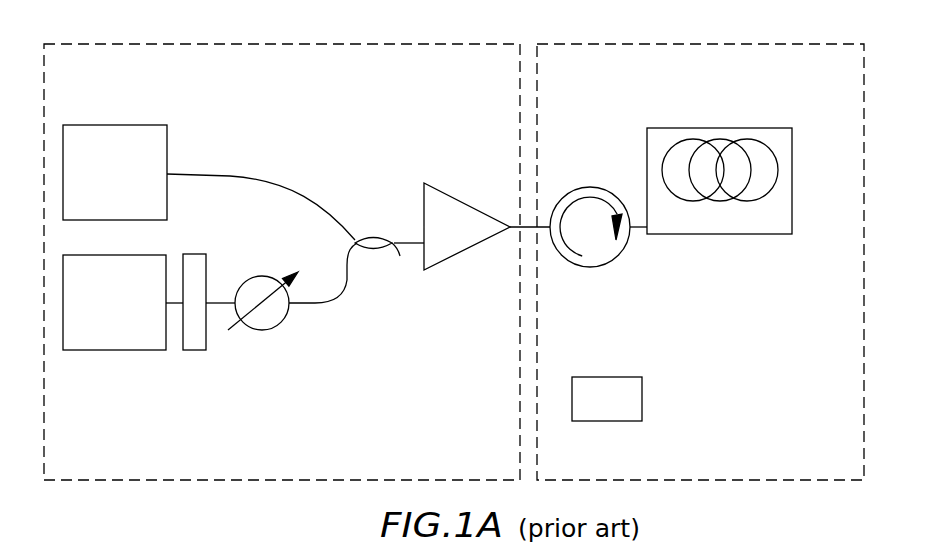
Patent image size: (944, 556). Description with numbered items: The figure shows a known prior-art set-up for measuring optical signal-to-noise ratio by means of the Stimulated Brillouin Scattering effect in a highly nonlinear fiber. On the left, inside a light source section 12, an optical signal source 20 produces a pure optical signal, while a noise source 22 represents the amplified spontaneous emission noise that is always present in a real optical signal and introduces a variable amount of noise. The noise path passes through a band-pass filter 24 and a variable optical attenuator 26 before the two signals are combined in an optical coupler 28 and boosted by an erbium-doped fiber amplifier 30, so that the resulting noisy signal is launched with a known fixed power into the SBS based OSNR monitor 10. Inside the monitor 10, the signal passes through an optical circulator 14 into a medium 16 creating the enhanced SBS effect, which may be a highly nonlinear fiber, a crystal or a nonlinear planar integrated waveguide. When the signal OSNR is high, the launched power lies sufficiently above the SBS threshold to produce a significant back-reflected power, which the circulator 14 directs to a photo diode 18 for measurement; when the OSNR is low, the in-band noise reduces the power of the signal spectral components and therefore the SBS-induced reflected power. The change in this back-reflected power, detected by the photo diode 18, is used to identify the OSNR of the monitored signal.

The SBS based OSNR monitor 10 is at (594, 80).
The light source section 12 is at (97, 81).
The optical circulator 14 is at (592, 187).
The medium 16 is at (712, 119).
The photo diode 18 is at (635, 398).
The optical signal source 20 is at (128, 125).
The noise source 22 is at (128, 255).
The bandpass filter (BP) 24 is at (206, 332).
The variable optical attenuator (VOA) 26 is at (263, 331).
The optical coupler 28 is at (374, 236).
The erbium-doped fiber amplifier (EDFA) 30 is at (467, 204).